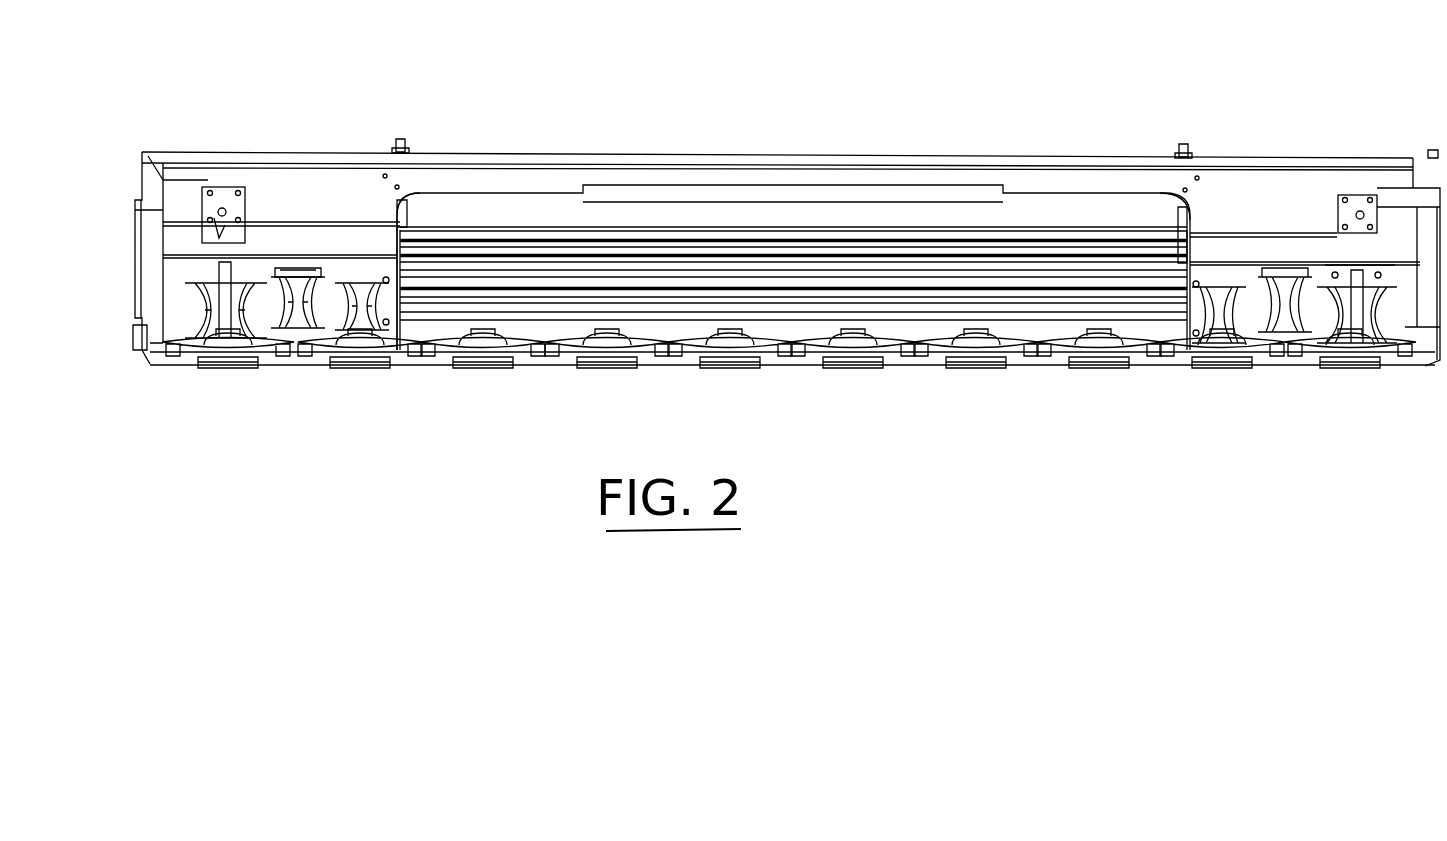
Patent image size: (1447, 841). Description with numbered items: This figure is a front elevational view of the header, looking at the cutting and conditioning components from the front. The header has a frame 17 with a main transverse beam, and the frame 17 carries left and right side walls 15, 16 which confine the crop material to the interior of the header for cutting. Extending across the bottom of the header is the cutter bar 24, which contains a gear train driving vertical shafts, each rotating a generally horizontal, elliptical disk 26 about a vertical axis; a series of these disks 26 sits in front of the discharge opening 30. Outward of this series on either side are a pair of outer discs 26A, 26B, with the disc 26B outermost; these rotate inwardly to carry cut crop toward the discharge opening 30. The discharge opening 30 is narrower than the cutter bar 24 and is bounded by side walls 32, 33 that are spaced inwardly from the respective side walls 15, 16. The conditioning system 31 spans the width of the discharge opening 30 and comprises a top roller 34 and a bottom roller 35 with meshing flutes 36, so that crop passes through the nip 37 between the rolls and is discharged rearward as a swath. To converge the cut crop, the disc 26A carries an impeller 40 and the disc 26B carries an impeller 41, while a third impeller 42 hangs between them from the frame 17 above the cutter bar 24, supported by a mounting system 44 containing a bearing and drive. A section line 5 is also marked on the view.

The section line 5- 5 is at (944, 399).
The side wall 15 is at (140, 268).
The side wall 16 is at (1430, 263).
The frame 17 is at (213, 233).
The cutter bar 24 is at (845, 370).
The disk 26 is at (760, 368).
The outer disc 26A is at (1221, 400).
The outermost disc 26B is at (1348, 415).
The discharge opening 30 is at (505, 199).
The conditioning system 31 is at (742, 238).
The side wall of discharge opening 32 is at (407, 273).
The side wall of discharge opening 33 is at (1180, 247).
The top roller 34 is at (810, 250).
The bottom roller 35 is at (890, 303).
The flutes 36 is at (672, 238).
The nip 37 is at (622, 287).
The impeller 40 is at (357, 281).
The impeller 41 is at (257, 265).
The third impeller 42 is at (303, 266).
The mounting system 44 is at (307, 266).